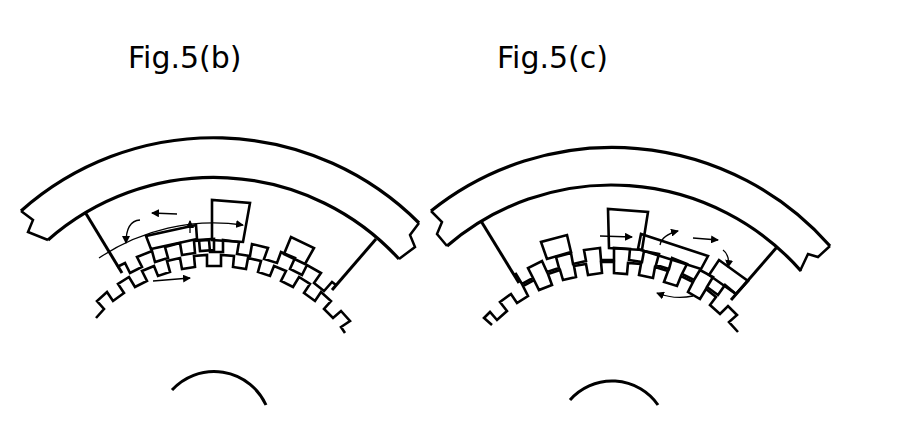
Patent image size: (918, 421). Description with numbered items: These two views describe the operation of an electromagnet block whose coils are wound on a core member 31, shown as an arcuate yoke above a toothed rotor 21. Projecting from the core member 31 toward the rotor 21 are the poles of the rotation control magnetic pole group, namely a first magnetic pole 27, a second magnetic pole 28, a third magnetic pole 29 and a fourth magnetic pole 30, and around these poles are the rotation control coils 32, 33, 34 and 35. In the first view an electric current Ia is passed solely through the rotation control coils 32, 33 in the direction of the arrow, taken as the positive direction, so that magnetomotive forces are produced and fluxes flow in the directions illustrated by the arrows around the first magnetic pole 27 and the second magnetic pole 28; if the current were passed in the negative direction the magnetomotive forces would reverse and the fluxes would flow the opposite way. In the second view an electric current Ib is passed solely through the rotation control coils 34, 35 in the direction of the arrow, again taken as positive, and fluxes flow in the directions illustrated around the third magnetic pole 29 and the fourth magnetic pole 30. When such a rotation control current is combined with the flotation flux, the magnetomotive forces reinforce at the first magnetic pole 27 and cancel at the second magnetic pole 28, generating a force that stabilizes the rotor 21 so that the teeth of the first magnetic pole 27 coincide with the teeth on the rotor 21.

In FIG. 5b, the rotor 21 is at (312, 378).
In FIG. 5c, the rotor 21 is at (688, 374).
In FIG. 5b, the first magnetic pole 27 is at (110, 232).
In FIG. 5b, the second magnetic pole 28 is at (200, 195).
In FIG. 5c, the third magnetic pole 29 is at (680, 232).
In FIG. 5c, the fourth magnetic pole 30 is at (740, 267).
In FIG. 5b, the core member 31 is at (278, 198).
In FIG. 5c, the core member 31 is at (630, 198).
In FIG. 5b, the rotation control coil 32 is at (140, 257).
In FIG. 5b, the rotation control coil 33 is at (206, 252).
In FIG. 5c, the rotation control coil 34 is at (653, 277).
In FIG. 5c, the rotation control coil 35 is at (723, 282).
In FIG. 5b, the electric current Ia is at (100, 262).
In FIG. 5c, the electric current Ib is at (750, 277).